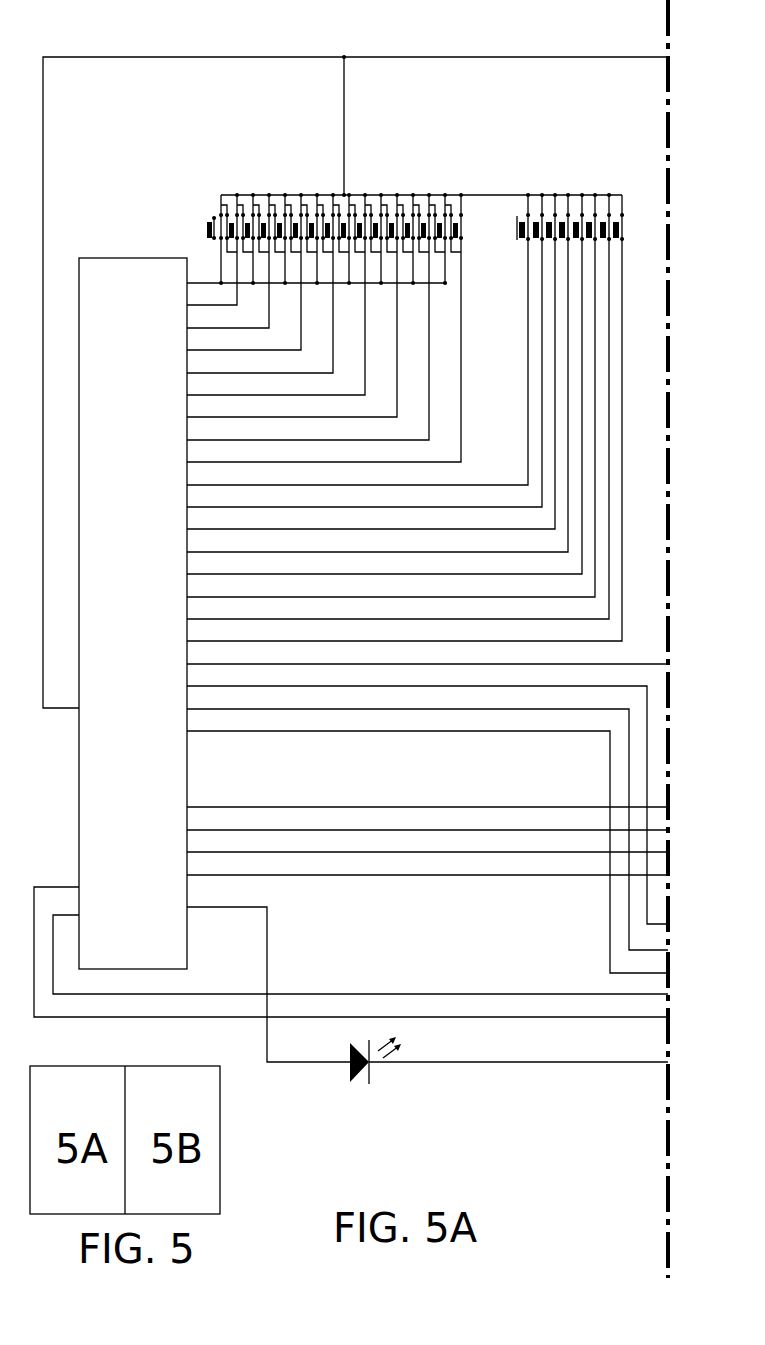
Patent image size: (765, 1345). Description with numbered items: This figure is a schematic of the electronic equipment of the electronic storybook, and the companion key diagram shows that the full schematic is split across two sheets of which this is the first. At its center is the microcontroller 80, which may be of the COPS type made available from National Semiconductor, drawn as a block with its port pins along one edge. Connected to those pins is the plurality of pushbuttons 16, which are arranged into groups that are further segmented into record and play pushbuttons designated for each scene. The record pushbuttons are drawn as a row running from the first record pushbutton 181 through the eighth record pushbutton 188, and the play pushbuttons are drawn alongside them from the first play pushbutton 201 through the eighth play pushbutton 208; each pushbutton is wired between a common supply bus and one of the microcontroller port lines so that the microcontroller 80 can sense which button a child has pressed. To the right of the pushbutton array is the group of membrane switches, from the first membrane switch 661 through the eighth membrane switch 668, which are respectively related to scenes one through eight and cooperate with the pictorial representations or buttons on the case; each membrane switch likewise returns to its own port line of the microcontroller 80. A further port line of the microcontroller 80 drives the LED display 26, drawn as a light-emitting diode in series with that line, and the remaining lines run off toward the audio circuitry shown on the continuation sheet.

The microcontroller 80 is at (147, 258).
The pushbuttons 16 is at (390, 170).
The record pushbutton 181 is at (206, 228).
The record pushbutton 188 is at (452, 222).
The play pushbutton 201 is at (229, 206).
The play pushbutton 208 is at (455, 202).
The membrane switch 661 is at (518, 228).
The membrane switch 668 is at (622, 217).
The LED display 26 is at (356, 1078).